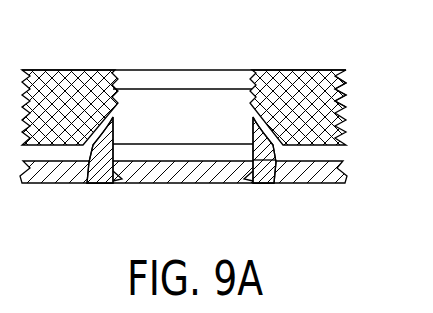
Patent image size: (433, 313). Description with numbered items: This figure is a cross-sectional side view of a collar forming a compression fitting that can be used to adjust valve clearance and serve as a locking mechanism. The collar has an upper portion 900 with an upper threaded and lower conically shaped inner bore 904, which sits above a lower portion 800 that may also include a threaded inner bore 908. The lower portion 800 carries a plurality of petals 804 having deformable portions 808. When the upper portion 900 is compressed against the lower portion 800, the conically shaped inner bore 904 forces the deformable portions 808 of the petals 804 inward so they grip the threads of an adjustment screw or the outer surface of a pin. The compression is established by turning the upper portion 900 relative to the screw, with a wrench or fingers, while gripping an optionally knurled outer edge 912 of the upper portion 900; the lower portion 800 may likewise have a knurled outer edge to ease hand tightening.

The upper portion 900 is at (66, 72).
The inner bore 904 is at (110, 90).
The deformable portions 808 is at (252, 118).
The knurled outer edge 912 is at (358, 89).
The petals 804 is at (274, 156).
The lower portion 800 is at (48, 172).
The threaded inner bore 908 is at (120, 176).